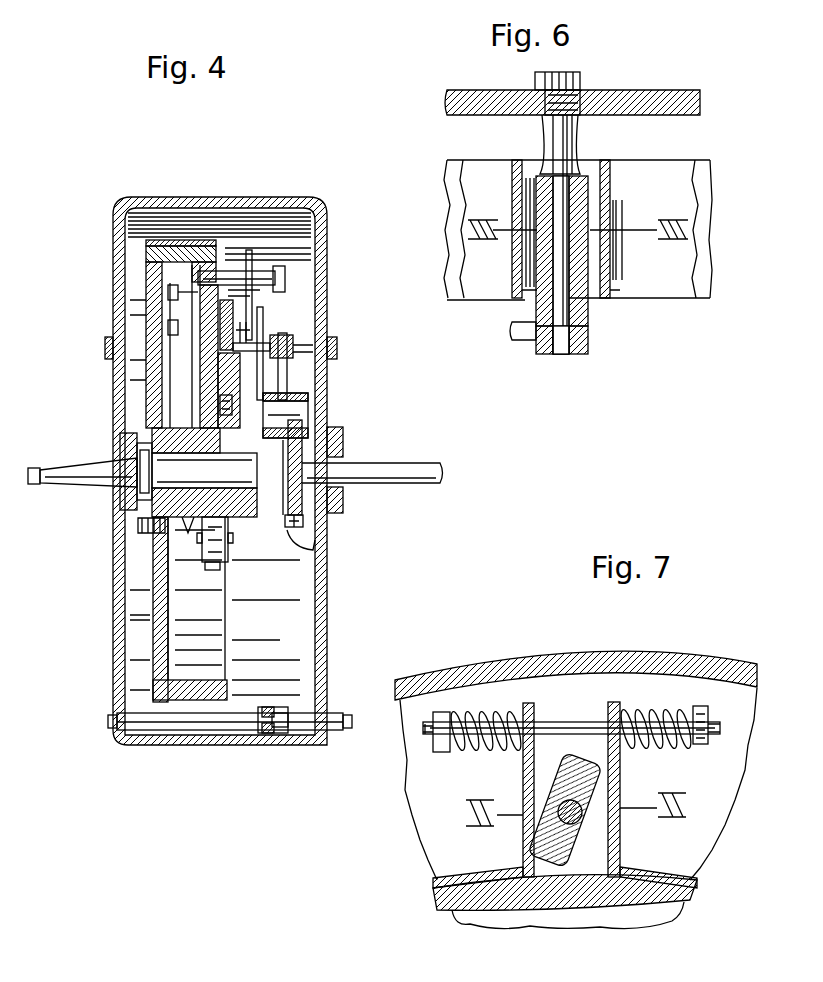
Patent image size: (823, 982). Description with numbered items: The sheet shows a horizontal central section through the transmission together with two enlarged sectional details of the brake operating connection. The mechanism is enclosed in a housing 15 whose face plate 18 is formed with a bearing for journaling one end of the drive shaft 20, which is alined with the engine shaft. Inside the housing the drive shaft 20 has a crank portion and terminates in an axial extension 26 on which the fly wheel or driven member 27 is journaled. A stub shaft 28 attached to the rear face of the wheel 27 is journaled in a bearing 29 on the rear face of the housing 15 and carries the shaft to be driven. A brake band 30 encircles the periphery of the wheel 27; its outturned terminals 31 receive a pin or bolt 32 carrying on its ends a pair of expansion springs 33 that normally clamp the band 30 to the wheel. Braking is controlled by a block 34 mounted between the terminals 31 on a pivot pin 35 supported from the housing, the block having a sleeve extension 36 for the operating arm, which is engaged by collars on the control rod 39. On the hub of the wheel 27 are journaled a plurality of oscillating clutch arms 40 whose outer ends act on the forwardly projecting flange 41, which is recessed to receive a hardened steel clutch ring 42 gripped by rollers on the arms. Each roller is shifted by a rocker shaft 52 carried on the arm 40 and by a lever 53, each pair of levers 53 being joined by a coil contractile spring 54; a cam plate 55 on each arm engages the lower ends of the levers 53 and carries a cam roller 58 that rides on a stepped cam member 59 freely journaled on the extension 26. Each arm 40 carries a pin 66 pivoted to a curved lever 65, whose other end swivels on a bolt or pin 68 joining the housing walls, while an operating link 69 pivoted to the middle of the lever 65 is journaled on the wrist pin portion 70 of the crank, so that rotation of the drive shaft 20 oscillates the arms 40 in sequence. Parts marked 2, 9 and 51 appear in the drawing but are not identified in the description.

In FIG. 4, the bearing 2 is at (305, 420).
In FIG. 4, the bracket 9 is at (340, 432).
In FIG. 4, the housing 15 is at (120, 280).
In FIG. 6, the housing 15 is at (698, 88).
In FIG. 7, the housing 15 is at (708, 667).
In FIG. 4, the face plate 18 is at (317, 292).
In FIG. 4, the drive shaft 20 is at (400, 483).
In FIG. 4, the axial extension 26 is at (118, 505).
In FIG. 4, the fly wheel or driven member 27 is at (150, 592).
In FIG. 7, the fly wheel or driven member 27 is at (572, 928).
In FIG. 4, the stub shaft 28 is at (90, 465).
In FIG. 4, the bearing 29 is at (150, 478).
In FIG. 4, the brake band 30 is at (190, 700).
In FIG. 6, the brake band 30 is at (700, 175).
In FIG. 7, the brake band 30 is at (433, 884).
In FIG. 6, the outturned terminals 31 is at (643, 262).
In FIG. 7, the outturned terminals 31 is at (528, 703).
In FIG. 7, the pin or bolt 32 is at (580, 722).
In FIG. 7, the expansion springs 33 is at (490, 712).
In FIG. 6, the block 34 is at (590, 180).
In FIG. 7, the block 34 is at (560, 768).
In FIG. 6, the pivot pin 35 is at (562, 356).
In FIG. 7, the pivot pin 35 is at (540, 822).
In FIG. 6, the sleeve extension 36 is at (590, 335).
In FIG. 4, the control rod 39 is at (317, 202).
In FIG. 4, the oscillating clutch arms 40 is at (200, 368).
In FIG. 4, the forwardly projecting flange 41 is at (180, 240).
In FIG. 6, the forwardly projecting flange 41 is at (712, 232).
In FIG. 7, the forwardly projecting flange 41 is at (435, 903).
In FIG. 4, the clutch ring 42 is at (258, 240).
In FIG. 4, the ring 51 is at (168, 292).
In FIG. 4, the rocker shaft 52 is at (168, 327).
In FIG. 4, the lever 53 is at (234, 310).
In FIG. 4, the coil contractile spring 54 is at (250, 340).
In FIG. 4, the cam plate 55 is at (257, 320).
In FIG. 4, the cam roller 58 is at (220, 405).
In FIG. 4, the stepped cam member 59 is at (233, 540).
In FIG. 4, the curved lever 65 is at (282, 266).
In FIG. 4, the pin 66 is at (285, 278).
In FIG. 4, the bolt or pin 68 is at (243, 730).
In FIG. 4, the operating link 69 is at (303, 472).
In FIG. 4, the wrist pin portion 70 is at (305, 400).